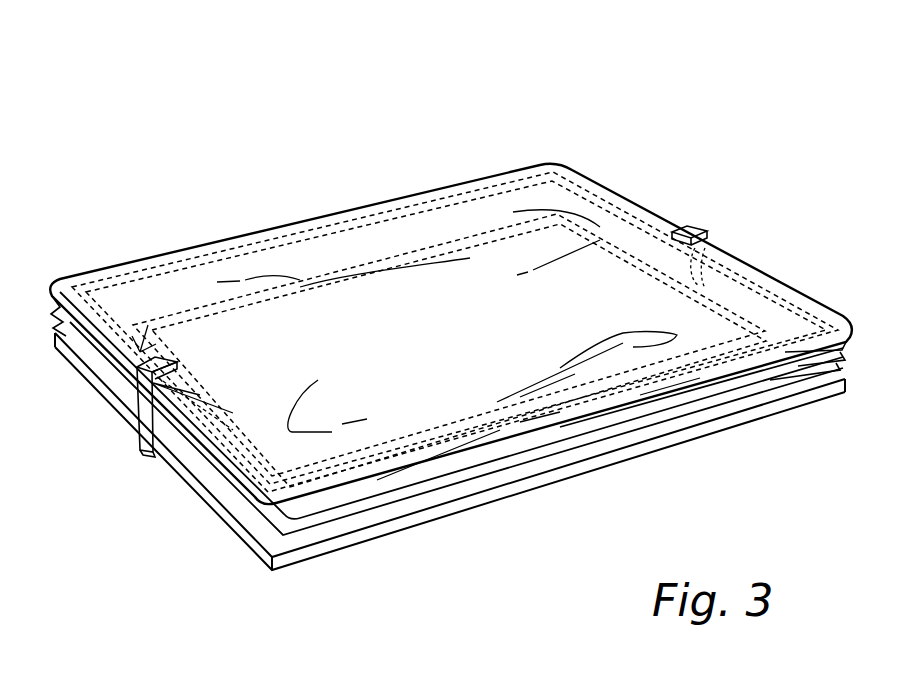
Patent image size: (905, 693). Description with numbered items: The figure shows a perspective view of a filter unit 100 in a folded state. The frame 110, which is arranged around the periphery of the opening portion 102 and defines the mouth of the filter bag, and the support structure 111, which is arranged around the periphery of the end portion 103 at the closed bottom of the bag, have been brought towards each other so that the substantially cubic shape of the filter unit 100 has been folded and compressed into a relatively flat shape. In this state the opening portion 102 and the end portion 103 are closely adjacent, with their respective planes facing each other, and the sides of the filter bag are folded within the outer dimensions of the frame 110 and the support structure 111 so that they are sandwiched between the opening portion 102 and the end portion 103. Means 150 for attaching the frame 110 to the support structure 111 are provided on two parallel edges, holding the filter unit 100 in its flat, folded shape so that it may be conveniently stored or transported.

The filter unit 100 is at (558, 90).
The opening portion 102 is at (268, 393).
The end portion 103 is at (435, 293).
The frame 110 is at (437, 512).
The support structure 111 is at (687, 368).
The means for attaching 150 is at (138, 427).